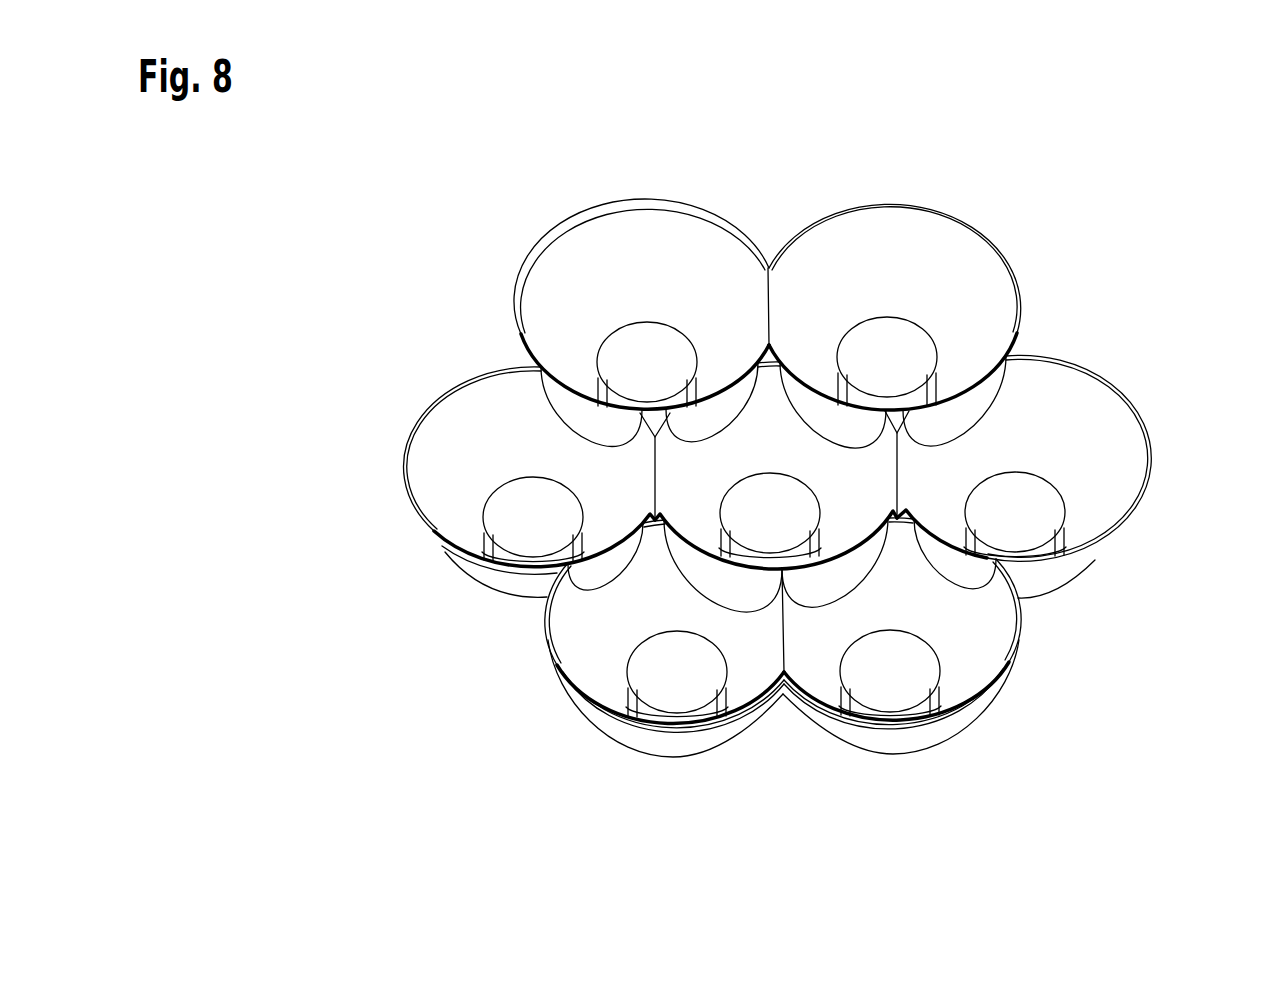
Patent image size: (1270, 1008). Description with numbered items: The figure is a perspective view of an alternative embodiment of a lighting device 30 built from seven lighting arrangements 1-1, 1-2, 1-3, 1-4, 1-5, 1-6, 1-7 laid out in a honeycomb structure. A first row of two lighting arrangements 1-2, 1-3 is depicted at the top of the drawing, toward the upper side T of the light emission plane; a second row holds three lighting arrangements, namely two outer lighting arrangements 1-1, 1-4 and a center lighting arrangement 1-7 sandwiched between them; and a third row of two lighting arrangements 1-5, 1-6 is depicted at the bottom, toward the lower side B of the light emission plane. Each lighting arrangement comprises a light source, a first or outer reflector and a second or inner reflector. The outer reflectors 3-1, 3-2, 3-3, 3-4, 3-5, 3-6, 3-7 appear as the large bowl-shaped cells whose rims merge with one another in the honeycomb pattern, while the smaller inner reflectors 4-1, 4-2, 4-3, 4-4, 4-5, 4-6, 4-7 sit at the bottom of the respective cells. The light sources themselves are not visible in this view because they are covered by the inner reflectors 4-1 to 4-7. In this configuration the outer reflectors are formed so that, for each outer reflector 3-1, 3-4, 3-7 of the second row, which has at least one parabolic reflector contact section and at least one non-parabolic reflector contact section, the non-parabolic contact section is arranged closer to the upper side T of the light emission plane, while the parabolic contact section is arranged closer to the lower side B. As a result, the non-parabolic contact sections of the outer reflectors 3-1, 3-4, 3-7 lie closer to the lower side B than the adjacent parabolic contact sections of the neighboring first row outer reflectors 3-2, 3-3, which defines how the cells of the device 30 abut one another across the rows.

The lighting device 30 is at (1141, 189).
The upper side of the light emission plane T is at (769, 162).
The lower side of the light emission plane B is at (796, 862).
The second row outer lighting arrangement 1-1 is at (394, 437).
The first row lighting arrangement 1-2 is at (550, 226).
The first row lighting arrangement 1-3 is at (969, 213).
The second row outer lighting arrangement 1-4 is at (1160, 446).
The third row lighting arrangement 1-5 is at (959, 742).
The third row lighting arrangement 1-6 is at (542, 666).
The second row center lighting arrangement 1-7 is at (791, 411).
The outer reflector 3-1 is at (492, 407).
The outer reflector 3-2 is at (613, 258).
The outer reflector 3-3 is at (958, 274).
The outer reflector 3-4 is at (1088, 413).
The outer reflector 3-5 is at (963, 653).
The outer reflector 3-6 is at (593, 663).
The outer reflector 3-7 is at (890, 514).
The inner reflector 4-1 is at (508, 507).
The inner reflector 4-2 is at (665, 345).
The inner reflector 4-3 is at (913, 350).
The inner reflector 4-4 is at (1040, 503).
The inner reflector 4-5 is at (889, 678).
The inner reflector 4-6 is at (664, 678).
The inner reflector 4-7 is at (767, 507).